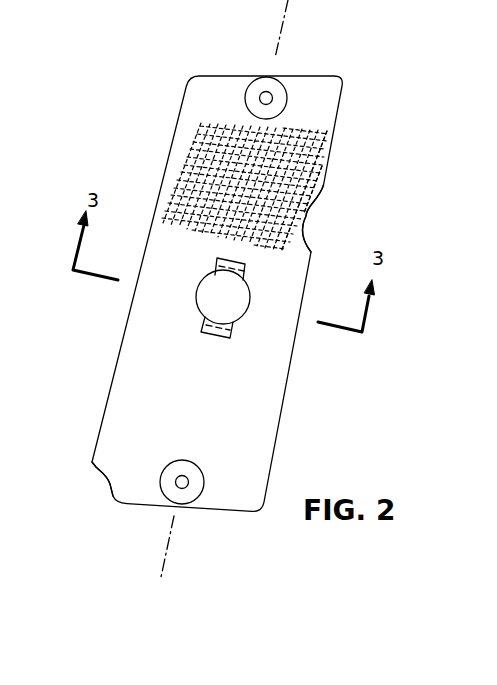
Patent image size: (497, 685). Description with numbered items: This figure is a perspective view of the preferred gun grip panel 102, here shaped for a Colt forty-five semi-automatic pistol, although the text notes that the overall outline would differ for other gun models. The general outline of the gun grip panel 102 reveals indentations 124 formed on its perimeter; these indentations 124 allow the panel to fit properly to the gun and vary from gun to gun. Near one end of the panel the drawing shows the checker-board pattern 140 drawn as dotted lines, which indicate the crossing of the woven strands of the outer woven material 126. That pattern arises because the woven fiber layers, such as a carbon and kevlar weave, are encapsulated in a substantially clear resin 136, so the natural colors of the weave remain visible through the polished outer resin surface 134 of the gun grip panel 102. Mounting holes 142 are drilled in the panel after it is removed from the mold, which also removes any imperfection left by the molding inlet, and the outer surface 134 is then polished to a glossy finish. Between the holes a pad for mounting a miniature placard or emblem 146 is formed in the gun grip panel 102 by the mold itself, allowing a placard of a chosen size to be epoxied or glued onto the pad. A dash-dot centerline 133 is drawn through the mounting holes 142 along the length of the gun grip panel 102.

The gun grip panel 102 is at (215, 280).
The indentations 124 is at (310, 216).
The outer woven material 126 is at (311, 133).
The longitudinal centerline 133 is at (168, 563).
The outer resin surface 134 is at (130, 377).
The resin 136 is at (308, 80).
The checker-board pattern 140 is at (195, 137).
The mounting holes 142 is at (185, 477).
The pad for mounting a miniature placard or emblem 146 is at (237, 322).